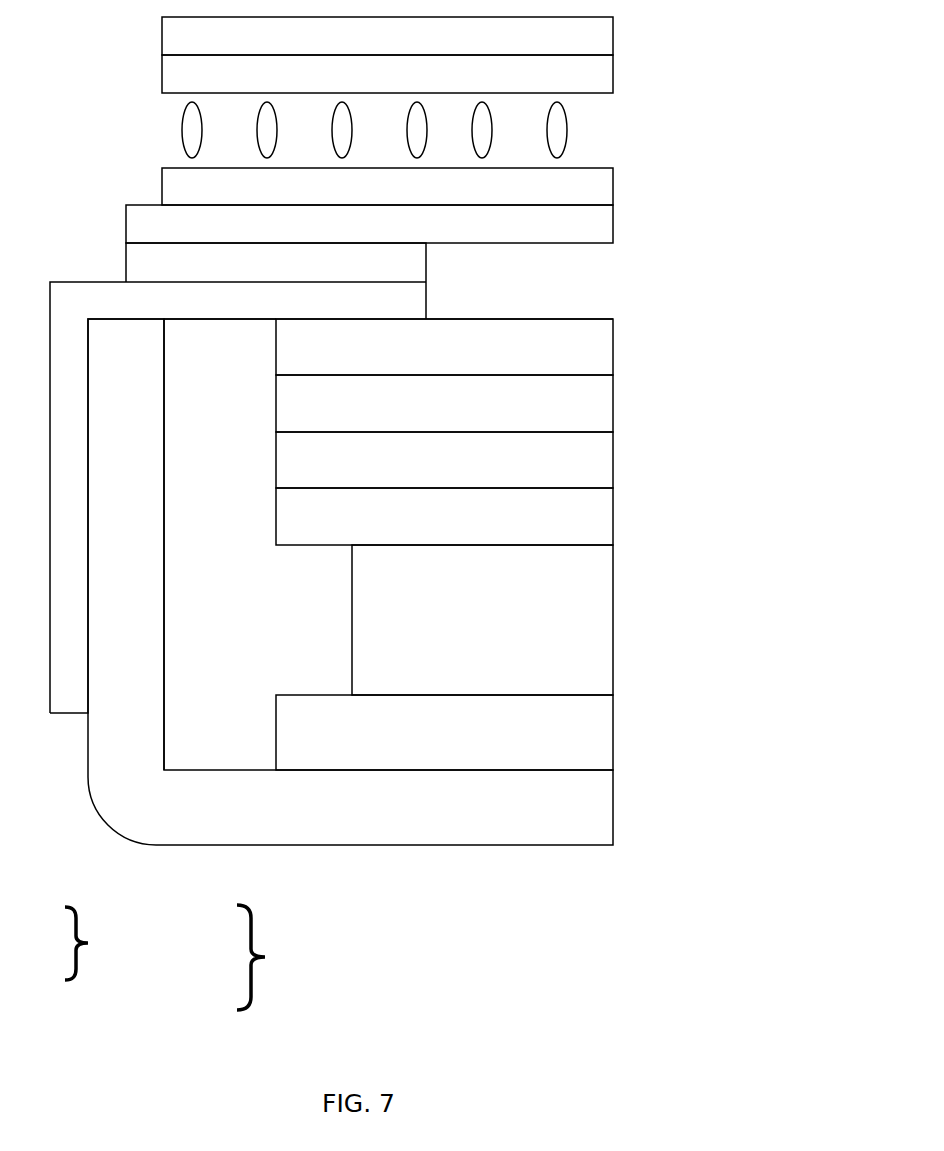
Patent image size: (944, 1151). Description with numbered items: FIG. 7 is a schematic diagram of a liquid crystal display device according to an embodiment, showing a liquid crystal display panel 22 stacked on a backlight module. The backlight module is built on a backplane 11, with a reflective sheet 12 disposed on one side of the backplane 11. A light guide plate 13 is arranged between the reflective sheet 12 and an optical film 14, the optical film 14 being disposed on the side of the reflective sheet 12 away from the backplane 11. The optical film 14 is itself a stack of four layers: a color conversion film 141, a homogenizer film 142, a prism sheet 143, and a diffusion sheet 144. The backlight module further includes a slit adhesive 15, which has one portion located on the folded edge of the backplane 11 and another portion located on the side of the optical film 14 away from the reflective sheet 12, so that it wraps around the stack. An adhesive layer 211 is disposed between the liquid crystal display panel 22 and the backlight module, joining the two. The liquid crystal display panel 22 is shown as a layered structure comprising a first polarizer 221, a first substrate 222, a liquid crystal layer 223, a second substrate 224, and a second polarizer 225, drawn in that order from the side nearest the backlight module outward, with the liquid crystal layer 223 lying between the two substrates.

The backplane 11 is at (587, 815).
The reflective sheet 12 is at (587, 750).
The light guide plate 13 is at (593, 648).
The optical film 14 is at (70, 944).
The color conversion film 141 is at (587, 523).
The homogenizer film 142 is at (593, 460).
The prism sheet 143 is at (593, 402).
The diffusion sheet 144 is at (593, 348).
The slit adhesive 15 is at (407, 300).
The adhesive layer 211 is at (407, 267).
The liquid crystal display panel 22 is at (245, 955).
The first polarizer 221 is at (593, 224).
The first substrate 222 is at (593, 187).
The liquid crystal layer 223 is at (557, 130).
The second substrate 224 is at (583, 72).
The second polarizer 225 is at (593, 42).